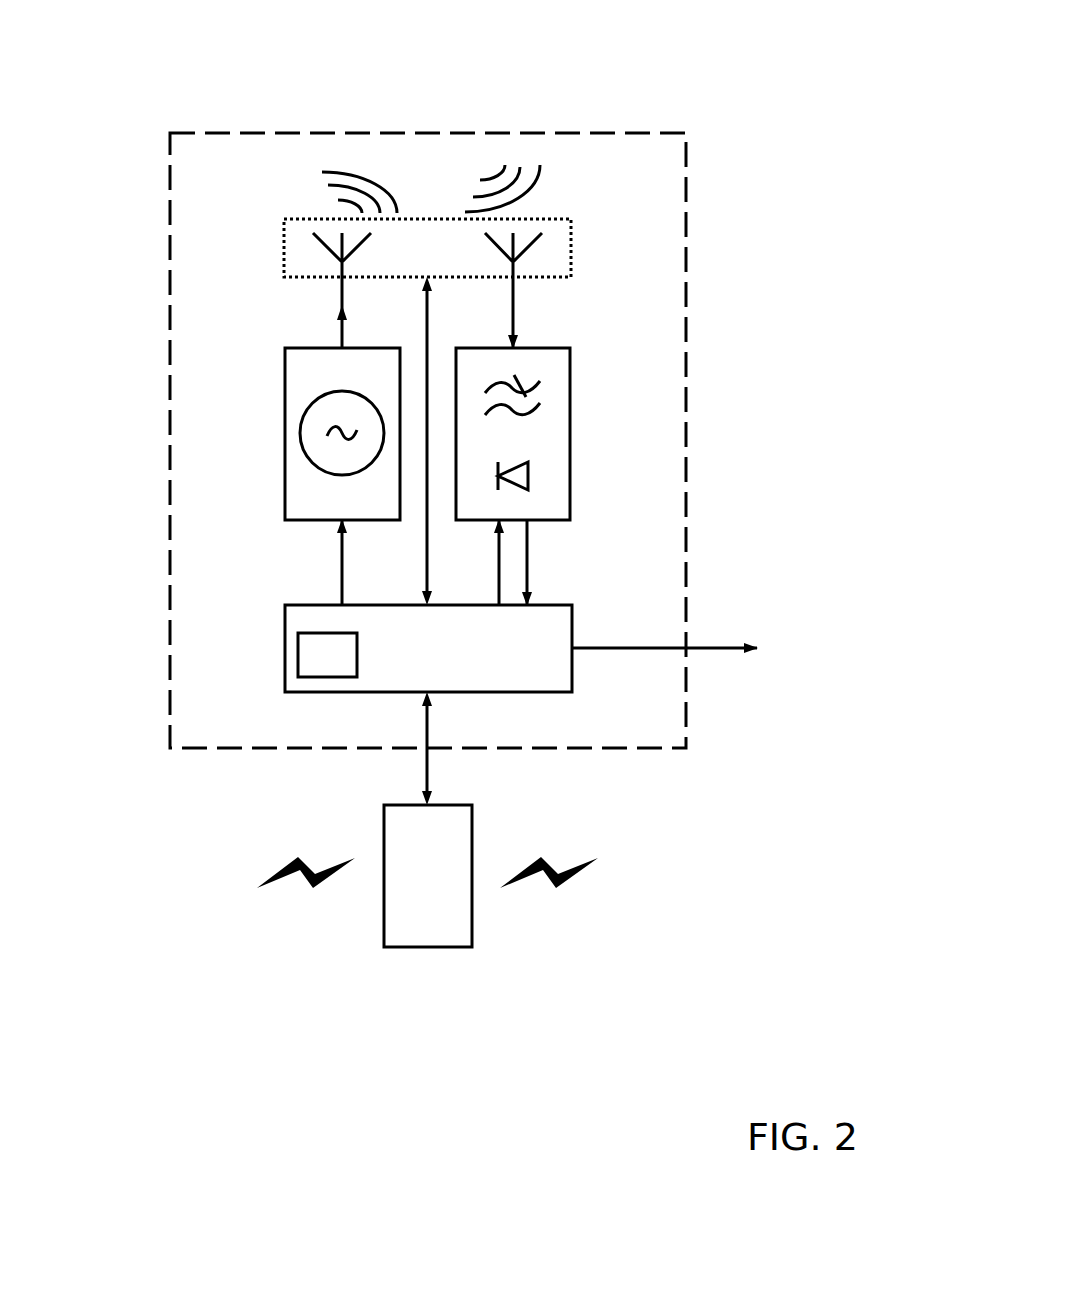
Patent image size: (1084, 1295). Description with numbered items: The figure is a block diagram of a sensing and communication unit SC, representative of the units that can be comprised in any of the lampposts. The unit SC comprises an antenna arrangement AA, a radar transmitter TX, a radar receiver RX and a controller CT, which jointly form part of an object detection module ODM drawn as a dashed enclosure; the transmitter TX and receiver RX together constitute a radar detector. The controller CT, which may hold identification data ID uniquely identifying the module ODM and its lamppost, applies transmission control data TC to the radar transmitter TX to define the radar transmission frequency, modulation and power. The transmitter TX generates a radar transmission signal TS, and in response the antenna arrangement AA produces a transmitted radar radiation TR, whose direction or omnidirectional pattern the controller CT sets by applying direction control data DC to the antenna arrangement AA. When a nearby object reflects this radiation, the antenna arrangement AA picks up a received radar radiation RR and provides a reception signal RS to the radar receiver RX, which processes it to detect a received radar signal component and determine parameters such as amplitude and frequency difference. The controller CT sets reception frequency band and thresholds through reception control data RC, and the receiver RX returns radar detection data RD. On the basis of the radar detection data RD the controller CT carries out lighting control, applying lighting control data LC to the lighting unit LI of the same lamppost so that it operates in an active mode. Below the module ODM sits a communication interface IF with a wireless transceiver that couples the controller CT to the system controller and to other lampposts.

The sensing and communication unit SC is at (87, 33).
The object detection module ODM is at (638, 142).
The antenna arrangement AA is at (285, 248).
The transmitted radar radiation TR is at (359, 177).
The received radar radiation RR is at (498, 177).
The radar transmission signal TS is at (321, 312).
The reception signal RS is at (537, 312).
The radar transmitter TX is at (290, 440).
The radar receiver RX is at (565, 440).
The transmission control data TC is at (319, 562).
The direction control data DC is at (405, 441).
The reception control data RC is at (474, 562).
The radar detection data RD is at (551, 562).
The controller CT is at (290, 662).
The identification data ID is at (327, 655).
The lighting control data LC is at (664, 632).
The lighting unit LI is at (730, 632).
The interface IF is at (433, 947).